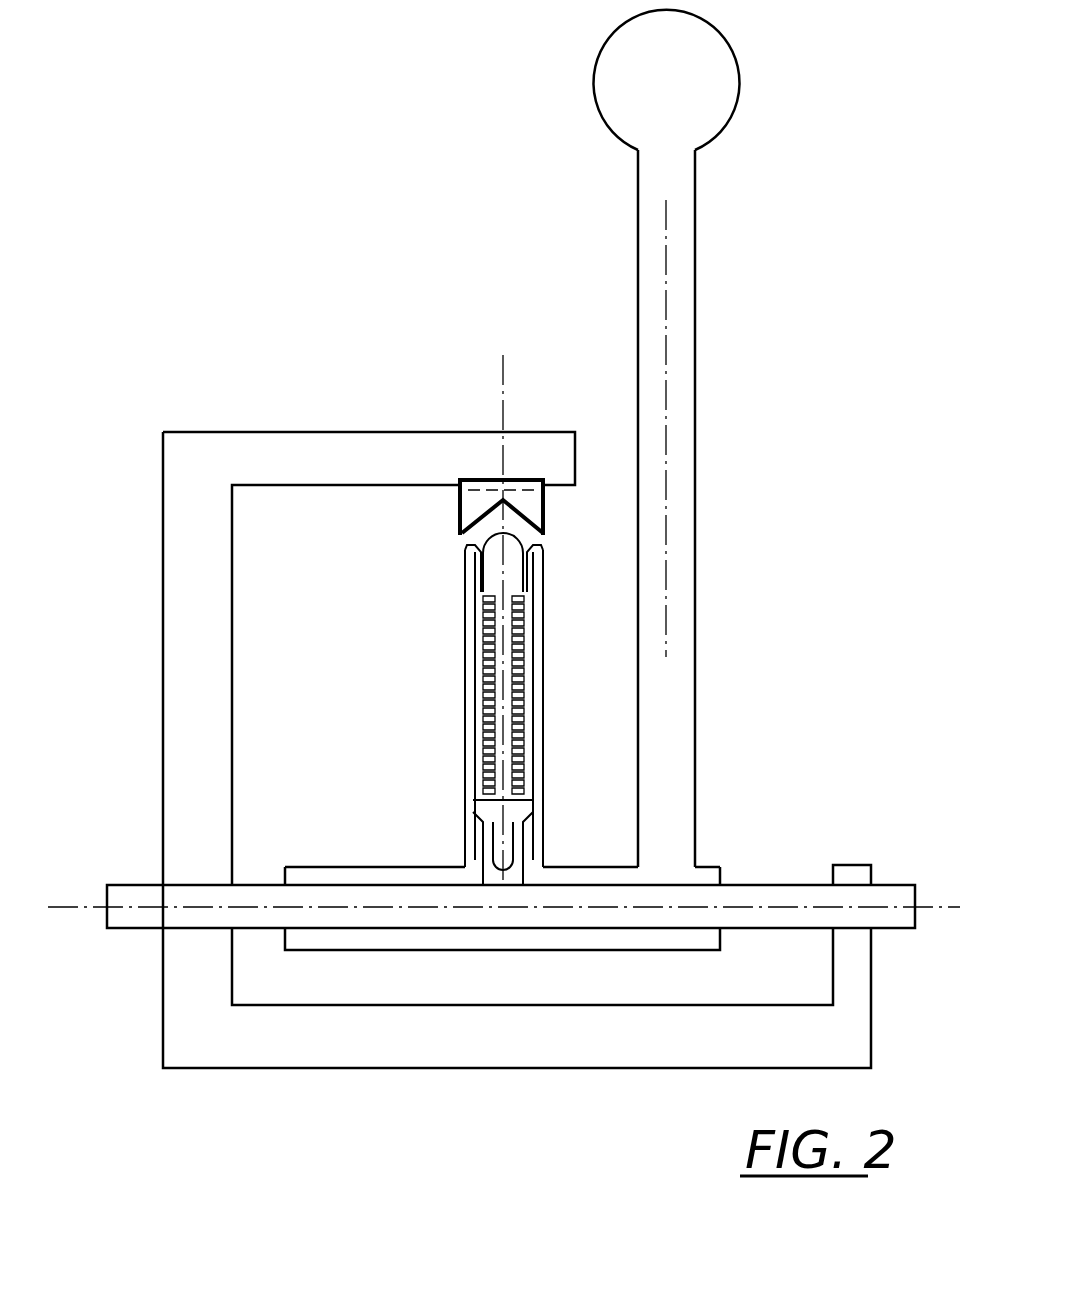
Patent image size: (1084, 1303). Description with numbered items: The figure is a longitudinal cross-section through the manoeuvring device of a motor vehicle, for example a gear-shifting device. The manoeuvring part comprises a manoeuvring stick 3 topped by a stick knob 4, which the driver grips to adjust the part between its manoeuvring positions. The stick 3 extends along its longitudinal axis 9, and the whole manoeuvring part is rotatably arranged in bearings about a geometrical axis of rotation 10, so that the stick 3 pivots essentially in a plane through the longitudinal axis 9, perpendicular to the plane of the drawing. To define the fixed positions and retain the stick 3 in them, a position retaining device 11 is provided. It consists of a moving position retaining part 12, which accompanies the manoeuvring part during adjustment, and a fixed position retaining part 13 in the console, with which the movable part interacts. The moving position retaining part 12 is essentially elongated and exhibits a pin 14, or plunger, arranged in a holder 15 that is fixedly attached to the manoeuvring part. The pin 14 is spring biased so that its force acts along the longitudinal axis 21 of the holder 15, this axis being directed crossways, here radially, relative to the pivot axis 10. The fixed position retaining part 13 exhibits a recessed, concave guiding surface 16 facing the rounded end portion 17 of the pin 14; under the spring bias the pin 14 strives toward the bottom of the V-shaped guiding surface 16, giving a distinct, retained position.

The manoeuvring stick 3 is at (696, 650).
The stick knob 4 is at (718, 110).
The longitudinal axis of the stick 9 is at (666, 318).
The geometrical axis of rotation 10 is at (63, 908).
The position retaining device 11 is at (437, 644).
The moving position retaining part 12 is at (465, 749).
The fixed position retaining part 13 is at (555, 522).
The pin 14 is at (540, 538).
The holder 15 is at (538, 726).
The guiding surface 16 is at (465, 540).
The rounded end portion 17 is at (498, 528).
The longitudinal axis 21 is at (503, 420).